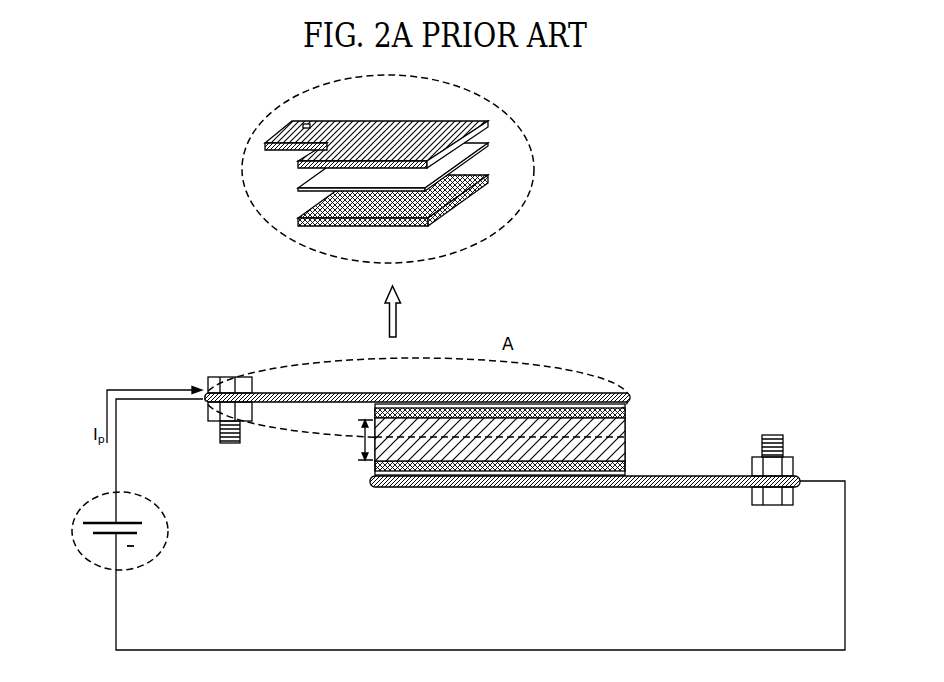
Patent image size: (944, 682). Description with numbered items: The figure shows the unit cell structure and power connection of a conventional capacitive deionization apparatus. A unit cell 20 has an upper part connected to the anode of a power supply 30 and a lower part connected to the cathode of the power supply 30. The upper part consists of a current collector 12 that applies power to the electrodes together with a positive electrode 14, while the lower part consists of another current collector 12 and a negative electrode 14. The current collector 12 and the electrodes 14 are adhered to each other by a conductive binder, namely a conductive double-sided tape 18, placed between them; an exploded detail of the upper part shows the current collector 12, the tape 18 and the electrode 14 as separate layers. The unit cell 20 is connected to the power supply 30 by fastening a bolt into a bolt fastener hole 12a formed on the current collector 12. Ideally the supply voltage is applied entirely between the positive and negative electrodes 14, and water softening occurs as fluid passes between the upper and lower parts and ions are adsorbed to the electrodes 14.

The current collector 12 is at (383, 122).
The bolt fastener hole 12a is at (316, 123).
The electrode 14 is at (488, 179).
The conductive double-sided tape 18 is at (468, 151).
The unit cell 20 is at (201, 405).
The power supply 30 is at (74, 538).